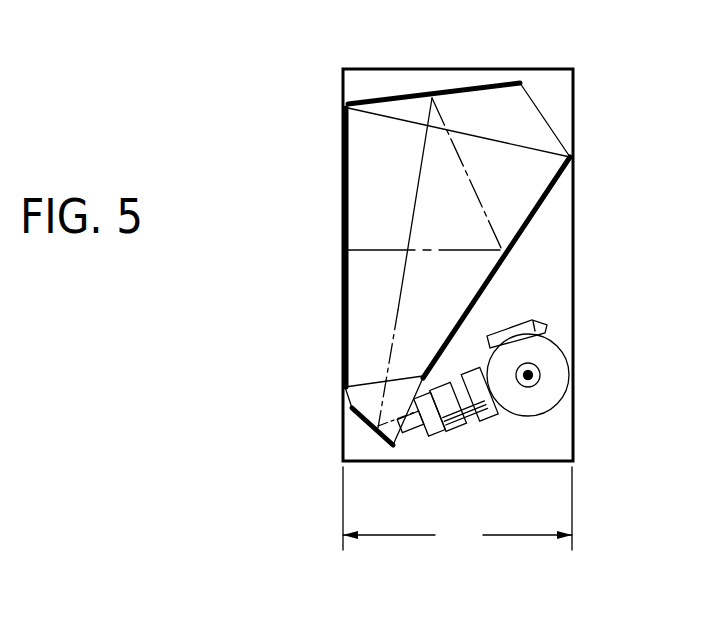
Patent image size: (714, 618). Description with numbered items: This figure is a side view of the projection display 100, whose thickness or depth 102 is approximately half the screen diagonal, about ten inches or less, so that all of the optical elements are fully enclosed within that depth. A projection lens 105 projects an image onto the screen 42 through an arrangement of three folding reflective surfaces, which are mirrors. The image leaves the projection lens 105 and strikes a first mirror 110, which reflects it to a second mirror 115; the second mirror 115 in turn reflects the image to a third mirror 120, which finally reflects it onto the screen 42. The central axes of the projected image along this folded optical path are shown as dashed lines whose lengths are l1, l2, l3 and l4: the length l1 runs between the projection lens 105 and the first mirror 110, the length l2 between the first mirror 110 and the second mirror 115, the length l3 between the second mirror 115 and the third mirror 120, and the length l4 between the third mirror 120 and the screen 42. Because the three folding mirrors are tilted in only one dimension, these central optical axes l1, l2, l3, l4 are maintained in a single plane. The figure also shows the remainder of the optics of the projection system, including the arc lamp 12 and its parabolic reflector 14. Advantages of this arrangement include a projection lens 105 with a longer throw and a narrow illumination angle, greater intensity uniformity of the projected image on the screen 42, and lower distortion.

The display 100 is at (391, 64).
The second mirror 115 is at (478, 86).
The screen 42 is at (343, 153).
The third mirror 120 is at (530, 208).
The first mirror 110 is at (352, 420).
The parabolic reflector 14 is at (556, 388).
The arc lamp 12 is at (531, 373).
The projection lens 105 is at (477, 420).
The thickness or depth 102 is at (508, 535).
The image central optical axis length l1 is at (417, 421).
The image central optical axis length l2 is at (396, 290).
The image central optical axis length l3 is at (467, 177).
The image central optical axis length l4 is at (360, 247).